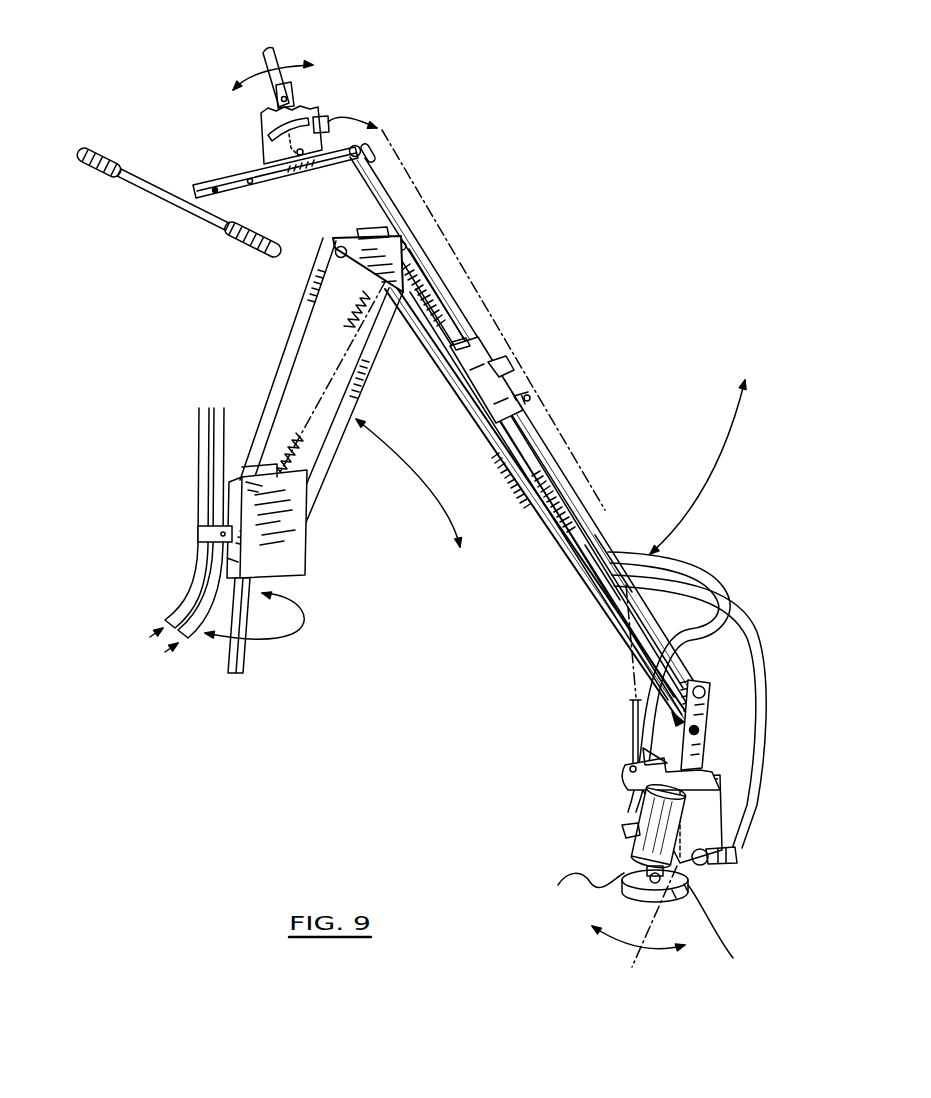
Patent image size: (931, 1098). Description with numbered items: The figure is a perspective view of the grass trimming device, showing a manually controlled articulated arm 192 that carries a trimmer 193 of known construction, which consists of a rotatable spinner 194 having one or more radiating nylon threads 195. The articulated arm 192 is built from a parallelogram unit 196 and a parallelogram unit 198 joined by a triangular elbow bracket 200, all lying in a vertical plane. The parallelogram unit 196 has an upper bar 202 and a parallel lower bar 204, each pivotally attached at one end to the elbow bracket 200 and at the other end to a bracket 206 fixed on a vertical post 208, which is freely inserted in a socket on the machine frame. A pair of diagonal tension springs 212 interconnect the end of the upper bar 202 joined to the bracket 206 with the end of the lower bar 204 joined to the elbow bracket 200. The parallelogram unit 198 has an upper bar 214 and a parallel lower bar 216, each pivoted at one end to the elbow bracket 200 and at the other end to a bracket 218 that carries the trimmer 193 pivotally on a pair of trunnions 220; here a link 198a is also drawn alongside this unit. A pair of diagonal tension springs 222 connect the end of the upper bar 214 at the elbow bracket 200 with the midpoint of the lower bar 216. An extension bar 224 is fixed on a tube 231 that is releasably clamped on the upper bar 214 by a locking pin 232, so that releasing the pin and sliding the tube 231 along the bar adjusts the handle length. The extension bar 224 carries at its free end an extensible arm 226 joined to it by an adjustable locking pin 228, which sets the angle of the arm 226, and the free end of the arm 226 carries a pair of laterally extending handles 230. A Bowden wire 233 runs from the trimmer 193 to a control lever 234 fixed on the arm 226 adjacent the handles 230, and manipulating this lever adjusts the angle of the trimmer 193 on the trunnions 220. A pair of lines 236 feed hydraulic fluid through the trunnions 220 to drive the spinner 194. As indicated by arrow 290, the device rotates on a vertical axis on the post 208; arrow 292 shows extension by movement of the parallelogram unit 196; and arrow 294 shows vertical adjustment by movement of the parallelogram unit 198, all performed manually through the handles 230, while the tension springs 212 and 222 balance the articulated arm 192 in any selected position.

The articulated arm 192 is at (537, 503).
The trimmer 193 is at (628, 826).
The rotatable spinner 194 is at (640, 892).
The nylon threads 195 is at (628, 915).
The parallelogram unit 196 is at (257, 422).
The parallelogram unit 198 is at (544, 478).
The link 198a is at (556, 482).
The triangular elbow bracket 200 is at (357, 252).
The upper bar 202 is at (277, 386).
The lower bar 204 is at (334, 450).
The bracket 206 is at (277, 557).
The vertical post 208 is at (243, 657).
The diagonal tension springs 212 is at (340, 378).
The upper bar 214 is at (600, 542).
The lower bar 216 is at (618, 628).
The bracket 218 is at (710, 773).
The trunnions 220 is at (692, 873).
The diagonal tension springs 222 is at (518, 492).
The extension bar 224 is at (430, 263).
The extensible arm 226 is at (222, 173).
The adjustable locking pin 228 is at (380, 153).
The handles 230 is at (158, 196).
The tube 231 is at (488, 362).
The locking pin 232 is at (532, 396).
The Bowden wire 233 is at (345, 118).
The control lever 234 is at (272, 60).
The lines 236 is at (745, 652).
The arrow 290 is at (285, 633).
The arrow 292 is at (427, 490).
The arrow 294 is at (707, 480).